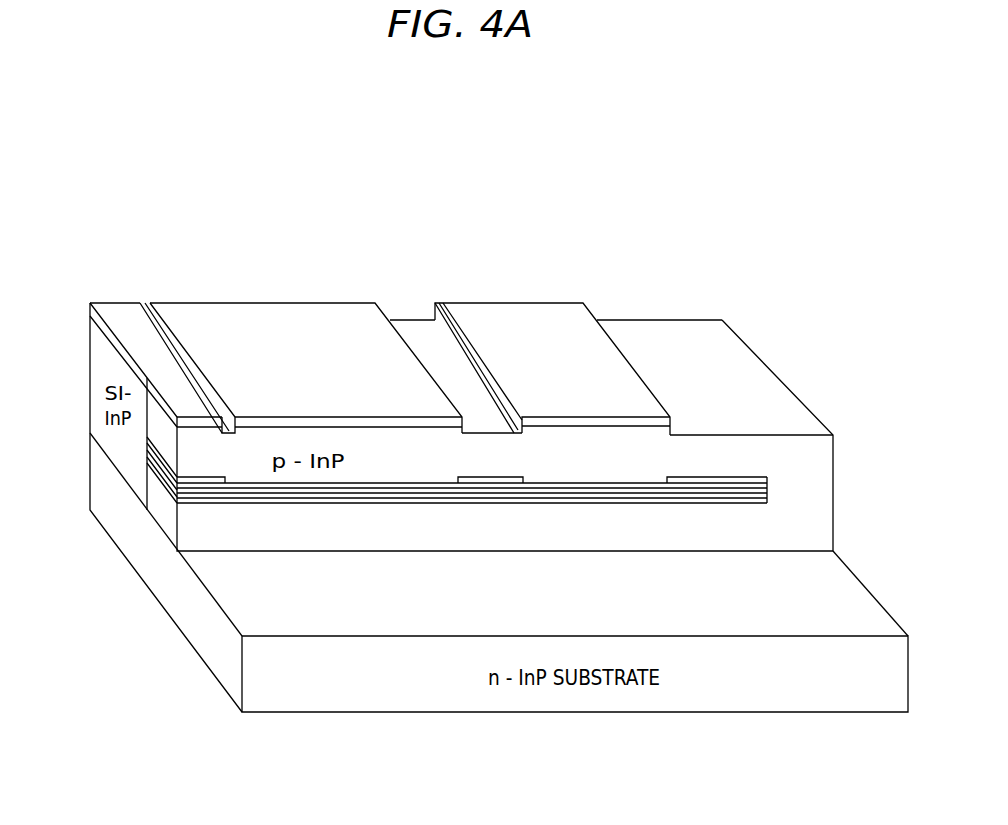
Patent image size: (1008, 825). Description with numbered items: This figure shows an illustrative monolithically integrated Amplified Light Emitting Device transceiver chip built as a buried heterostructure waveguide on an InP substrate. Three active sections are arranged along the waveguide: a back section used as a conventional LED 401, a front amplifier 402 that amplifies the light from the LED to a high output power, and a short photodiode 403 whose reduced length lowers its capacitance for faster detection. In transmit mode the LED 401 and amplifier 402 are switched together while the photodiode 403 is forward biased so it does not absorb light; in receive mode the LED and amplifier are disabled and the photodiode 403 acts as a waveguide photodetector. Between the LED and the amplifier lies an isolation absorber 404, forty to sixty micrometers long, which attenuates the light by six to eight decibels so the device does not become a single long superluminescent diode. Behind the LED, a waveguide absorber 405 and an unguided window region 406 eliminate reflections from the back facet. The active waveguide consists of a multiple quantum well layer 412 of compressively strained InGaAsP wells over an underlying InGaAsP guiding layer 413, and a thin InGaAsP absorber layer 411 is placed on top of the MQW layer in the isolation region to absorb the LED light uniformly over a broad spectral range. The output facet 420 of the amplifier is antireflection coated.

The LED section 401 is at (497, 206).
The amplifier section 402 is at (223, 206).
The photodiode section 403 is at (63, 206).
The isolation absorber 404 is at (362, 206).
The waveguide absorber 405 is at (673, 338).
The unguided window region 406 is at (688, 206).
The Q absorber layer 411 is at (190, 477).
The MQW layer 412 is at (251, 488).
The guiding layer 413 is at (747, 497).
The output facet 420 is at (193, 608).